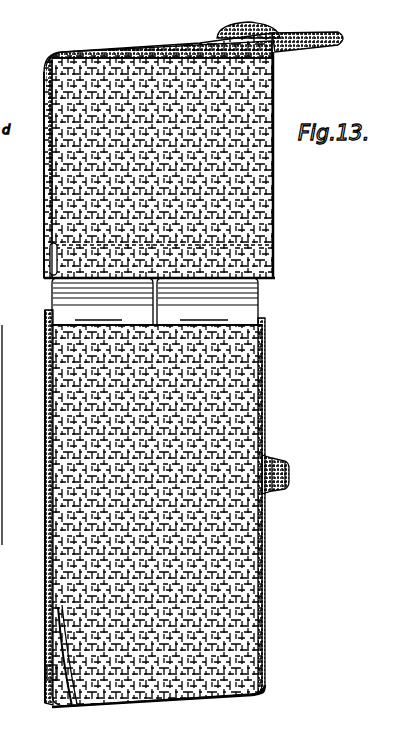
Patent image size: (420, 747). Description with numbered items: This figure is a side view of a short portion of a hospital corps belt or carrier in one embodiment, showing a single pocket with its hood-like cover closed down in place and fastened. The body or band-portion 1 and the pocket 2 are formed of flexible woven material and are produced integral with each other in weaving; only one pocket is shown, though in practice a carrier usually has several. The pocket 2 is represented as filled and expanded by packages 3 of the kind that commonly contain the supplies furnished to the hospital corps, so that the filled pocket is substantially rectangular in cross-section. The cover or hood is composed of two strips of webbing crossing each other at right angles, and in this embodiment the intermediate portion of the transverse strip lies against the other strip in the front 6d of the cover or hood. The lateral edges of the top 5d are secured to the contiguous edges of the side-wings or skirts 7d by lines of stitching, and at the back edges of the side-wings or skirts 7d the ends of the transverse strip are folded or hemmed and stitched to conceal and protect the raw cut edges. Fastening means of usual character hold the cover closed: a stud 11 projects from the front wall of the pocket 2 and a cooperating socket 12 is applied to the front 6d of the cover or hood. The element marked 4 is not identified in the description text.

The body or band-portion 1 is at (45, 428).
The pocket 2 is at (265, 372).
The packages 3 is at (151, 312).
The partition band 4 is at (47, 292).
The top of the cover or hood 5d is at (47, 176).
The front of the cover or hood 6d is at (147, 48).
The side-wings or skirts 7d is at (275, 229).
The stud 11 is at (291, 469).
The socket 12 is at (228, 27).